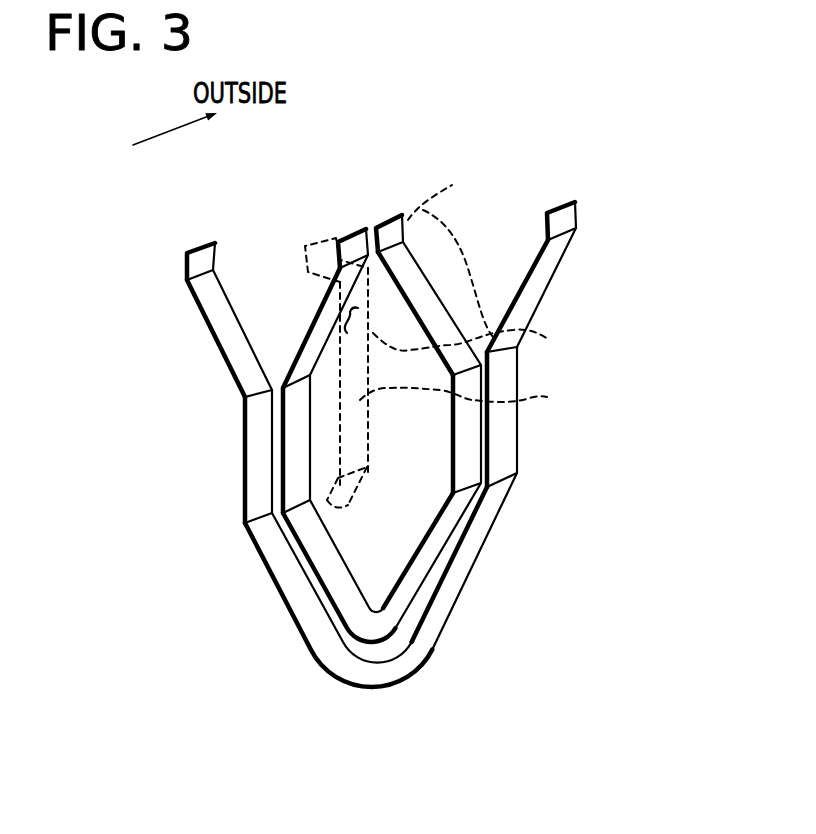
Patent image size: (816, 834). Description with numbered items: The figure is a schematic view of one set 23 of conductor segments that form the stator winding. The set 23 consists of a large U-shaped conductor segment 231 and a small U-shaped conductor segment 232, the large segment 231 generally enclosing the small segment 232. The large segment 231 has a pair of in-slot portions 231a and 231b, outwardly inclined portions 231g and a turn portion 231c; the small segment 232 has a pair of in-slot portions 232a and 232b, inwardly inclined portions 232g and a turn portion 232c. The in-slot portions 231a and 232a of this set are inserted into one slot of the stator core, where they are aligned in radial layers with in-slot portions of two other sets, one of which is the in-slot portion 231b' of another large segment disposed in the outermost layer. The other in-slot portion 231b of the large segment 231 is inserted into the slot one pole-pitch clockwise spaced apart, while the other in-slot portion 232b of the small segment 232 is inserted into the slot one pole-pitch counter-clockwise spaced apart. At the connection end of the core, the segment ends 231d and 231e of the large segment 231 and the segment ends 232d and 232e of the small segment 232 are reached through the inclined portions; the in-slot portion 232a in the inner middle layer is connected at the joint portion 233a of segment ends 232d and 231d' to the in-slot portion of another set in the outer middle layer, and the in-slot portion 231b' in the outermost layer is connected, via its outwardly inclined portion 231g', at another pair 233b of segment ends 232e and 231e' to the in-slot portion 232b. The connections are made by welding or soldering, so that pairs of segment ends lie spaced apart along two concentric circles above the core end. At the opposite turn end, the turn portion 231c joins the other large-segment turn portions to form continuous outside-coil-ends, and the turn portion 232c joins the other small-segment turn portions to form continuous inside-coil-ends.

The set of large and small U-shaped conductor segments 23 is at (303, 667).
The large U-shaped conductor segment 231 is at (553, 300).
The in-slot portion 231a is at (258, 421).
The in-slot portion 231b is at (567, 417).
The turn portion 231c is at (365, 677).
The segment end 231d is at (143, 256).
The segment end 231e is at (625, 216).
The outwardly inclined portion 231g is at (389, 312).
The segment end 231d' is at (288, 247).
The segment end 231e' is at (450, 242).
The outwardly inclined portion 231g' is at (496, 343).
The in-slot portion 231b' is at (475, 388).
The small U-shaped conductor segment 232 is at (473, 308).
The in-slot portion 232a is at (300, 472).
The in-slot portion 232b is at (465, 470).
The turn portion 232c is at (375, 630).
The segment end 232d is at (358, 224).
The segment end 232e is at (390, 217).
The inwardly inclined portion 232g is at (313, 343).
The joint portion 233a is at (327, 212).
The pair of segment ends 233b is at (409, 184).